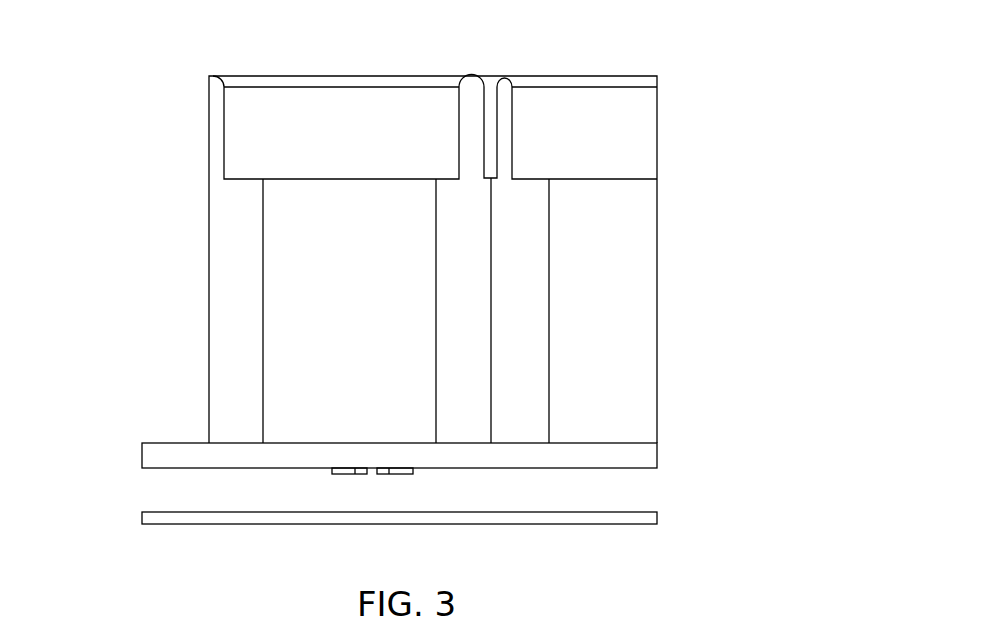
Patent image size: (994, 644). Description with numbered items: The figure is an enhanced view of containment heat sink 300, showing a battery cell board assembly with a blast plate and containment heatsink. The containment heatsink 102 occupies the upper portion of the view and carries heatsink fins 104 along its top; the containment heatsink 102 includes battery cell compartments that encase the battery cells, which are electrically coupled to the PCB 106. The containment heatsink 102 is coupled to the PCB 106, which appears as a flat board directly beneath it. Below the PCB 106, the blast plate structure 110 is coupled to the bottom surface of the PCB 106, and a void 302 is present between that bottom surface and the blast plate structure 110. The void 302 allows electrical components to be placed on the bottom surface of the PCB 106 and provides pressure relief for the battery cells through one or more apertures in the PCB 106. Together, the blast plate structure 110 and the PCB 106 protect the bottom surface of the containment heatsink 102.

The enhanced view of containment heat sink 300 is at (685, 62).
The containment heatsink 102 is at (636, 226).
The heatsink fins 104 is at (241, 136).
The PCB 106 is at (150, 455).
The void 302 is at (631, 495).
The blast plate structure 110 is at (238, 519).